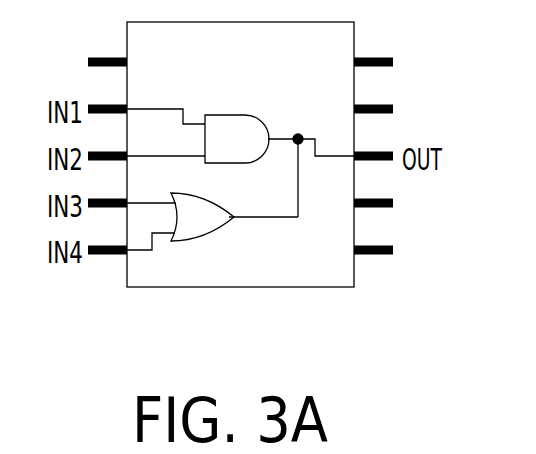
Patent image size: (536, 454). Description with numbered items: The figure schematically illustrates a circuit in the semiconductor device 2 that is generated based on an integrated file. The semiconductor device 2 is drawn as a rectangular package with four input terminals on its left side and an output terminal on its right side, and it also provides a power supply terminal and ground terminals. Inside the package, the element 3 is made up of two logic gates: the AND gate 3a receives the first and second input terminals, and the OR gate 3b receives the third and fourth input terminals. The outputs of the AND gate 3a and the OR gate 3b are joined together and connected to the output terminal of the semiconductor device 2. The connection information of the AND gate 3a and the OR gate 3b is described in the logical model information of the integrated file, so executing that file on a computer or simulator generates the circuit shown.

The semiconductor device 2 is at (178, 274).
The element 3 is at (240, 244).
The AND gate 3a is at (250, 153).
The OR gate 3b is at (218, 227).